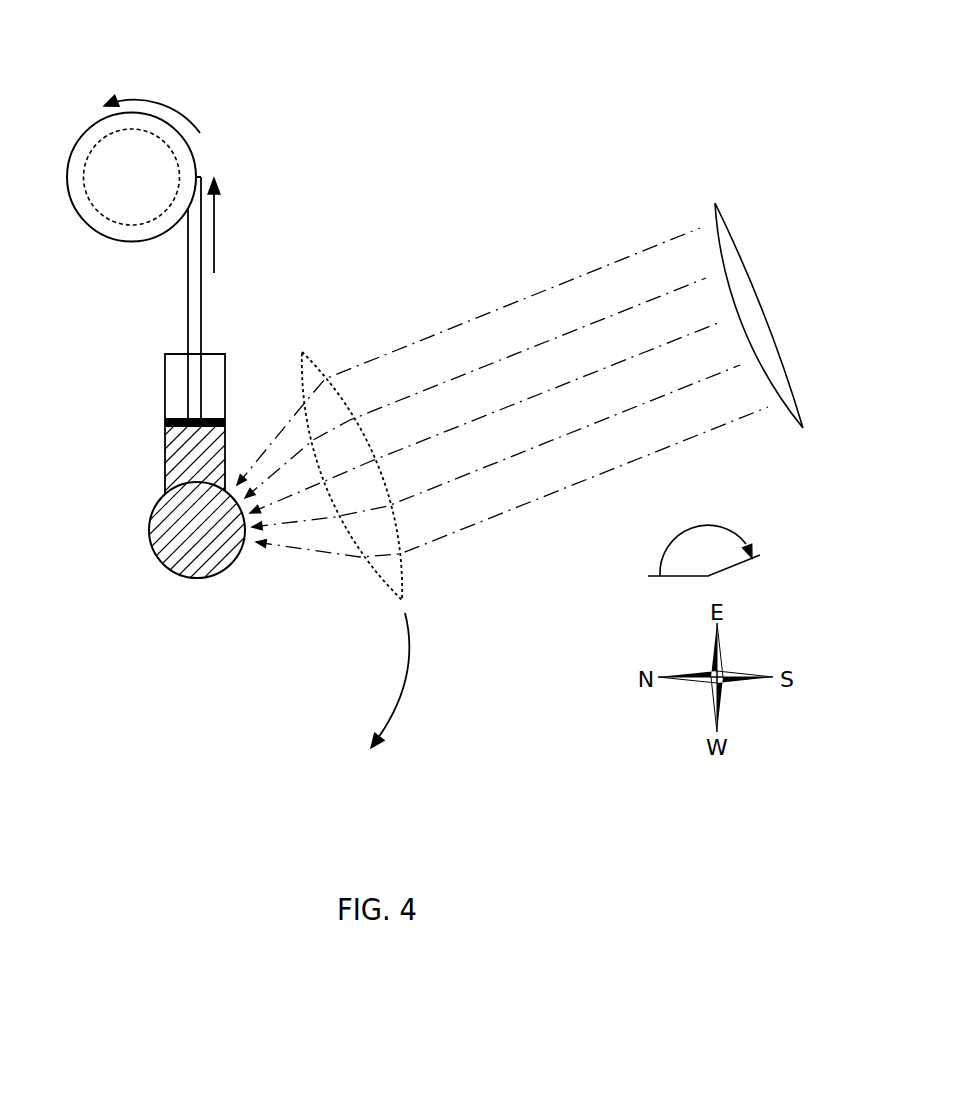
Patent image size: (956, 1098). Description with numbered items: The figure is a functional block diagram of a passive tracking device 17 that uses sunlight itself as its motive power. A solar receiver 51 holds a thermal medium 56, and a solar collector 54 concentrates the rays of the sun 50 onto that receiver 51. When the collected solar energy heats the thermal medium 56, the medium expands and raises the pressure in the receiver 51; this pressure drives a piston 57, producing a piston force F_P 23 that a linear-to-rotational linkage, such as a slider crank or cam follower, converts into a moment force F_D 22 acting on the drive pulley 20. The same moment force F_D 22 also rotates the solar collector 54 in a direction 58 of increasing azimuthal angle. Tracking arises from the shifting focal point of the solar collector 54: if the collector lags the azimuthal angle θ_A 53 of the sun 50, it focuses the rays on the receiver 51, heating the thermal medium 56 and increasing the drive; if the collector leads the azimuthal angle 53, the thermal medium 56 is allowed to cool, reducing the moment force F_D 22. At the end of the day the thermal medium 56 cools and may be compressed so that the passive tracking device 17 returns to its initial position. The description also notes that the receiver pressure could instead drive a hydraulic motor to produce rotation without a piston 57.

The passive tracking device 17 is at (412, 57).
The drive pulley 20 is at (96, 233).
The moment force F_D 22 is at (173, 103).
The force F_P 23 is at (216, 258).
The piston 57 is at (203, 305).
The solar receiver 51 is at (164, 563).
The thermal medium 56 is at (190, 549).
The solar collector 54 is at (308, 362).
The sun 50 is at (799, 428).
The azimuthal angle θ_A 53 is at (723, 533).
The direction of increasing azimuthal angle 58 is at (411, 643).